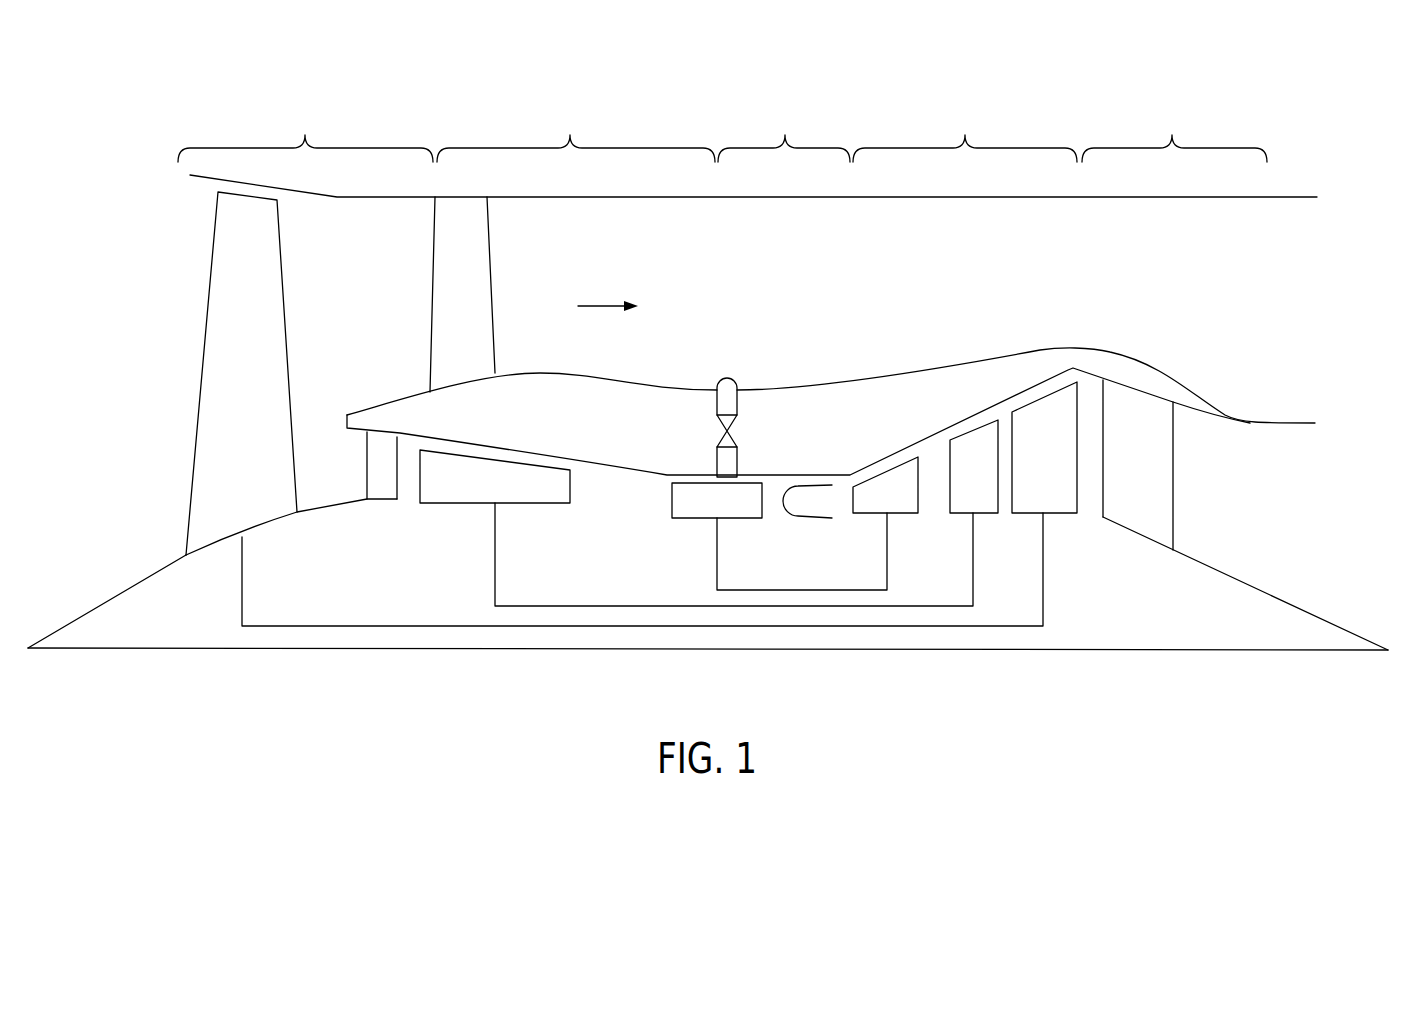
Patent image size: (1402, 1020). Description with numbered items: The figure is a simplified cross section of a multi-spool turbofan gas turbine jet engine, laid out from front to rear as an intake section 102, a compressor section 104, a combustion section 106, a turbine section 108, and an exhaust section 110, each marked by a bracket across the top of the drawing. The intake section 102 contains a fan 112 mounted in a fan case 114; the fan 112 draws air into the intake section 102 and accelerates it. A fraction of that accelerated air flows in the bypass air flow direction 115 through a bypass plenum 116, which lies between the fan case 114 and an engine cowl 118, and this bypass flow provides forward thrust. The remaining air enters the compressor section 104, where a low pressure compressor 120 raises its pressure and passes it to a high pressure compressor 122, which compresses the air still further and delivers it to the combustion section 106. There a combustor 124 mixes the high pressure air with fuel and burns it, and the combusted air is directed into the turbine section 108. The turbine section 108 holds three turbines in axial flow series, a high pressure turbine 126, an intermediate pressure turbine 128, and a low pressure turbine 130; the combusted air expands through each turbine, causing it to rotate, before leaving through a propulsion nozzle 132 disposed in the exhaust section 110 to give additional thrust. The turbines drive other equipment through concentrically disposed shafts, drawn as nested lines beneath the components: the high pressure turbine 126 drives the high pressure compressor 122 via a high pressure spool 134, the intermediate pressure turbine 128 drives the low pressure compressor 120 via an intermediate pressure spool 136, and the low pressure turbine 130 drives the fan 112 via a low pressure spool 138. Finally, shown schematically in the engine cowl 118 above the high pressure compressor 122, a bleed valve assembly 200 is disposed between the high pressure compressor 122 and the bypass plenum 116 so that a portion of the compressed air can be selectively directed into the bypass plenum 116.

The intake section 102 is at (305, 132).
The compressor section 104 is at (576, 132).
The combustion section 106 is at (784, 132).
The turbine section 108 is at (965, 132).
The exhaust section 110 is at (1174, 132).
The fan 112 is at (212, 265).
The fan case 114 is at (350, 197).
The bypass air flow direction 115 is at (603, 303).
The bypass plenum 116 is at (806, 278).
The engine cowl 118 is at (803, 390).
The low pressure compressor 120 is at (460, 503).
The high pressure compressor 122 is at (688, 520).
The combustor 124 is at (808, 493).
The high pressure turbine 126 is at (908, 470).
The intermediate pressure turbine 128 is at (990, 435).
The low pressure turbine 130 is at (1065, 393).
The propulsion nozzle 132 is at (1249, 504).
The high pressure spool 134 is at (808, 585).
The intermediate pressure spool 136 is at (913, 605).
The low pressure spool 138 is at (993, 625).
The bleed valve assembly 200 is at (705, 430).